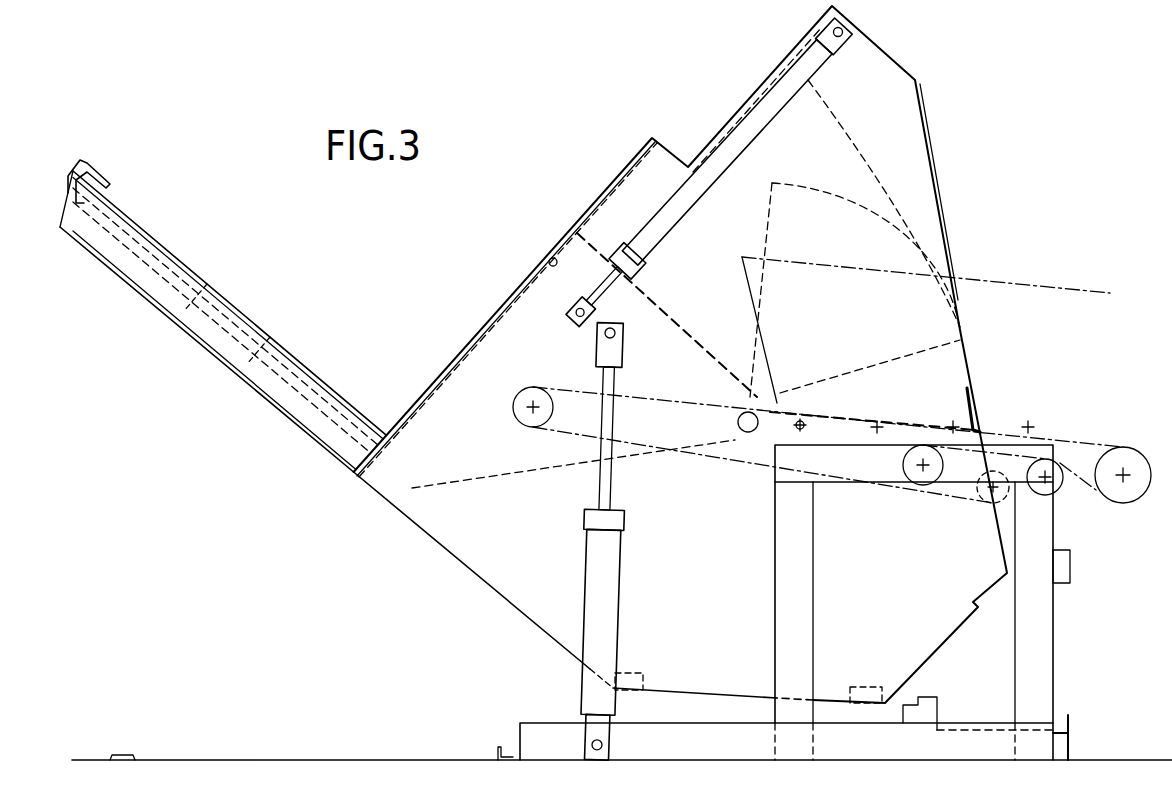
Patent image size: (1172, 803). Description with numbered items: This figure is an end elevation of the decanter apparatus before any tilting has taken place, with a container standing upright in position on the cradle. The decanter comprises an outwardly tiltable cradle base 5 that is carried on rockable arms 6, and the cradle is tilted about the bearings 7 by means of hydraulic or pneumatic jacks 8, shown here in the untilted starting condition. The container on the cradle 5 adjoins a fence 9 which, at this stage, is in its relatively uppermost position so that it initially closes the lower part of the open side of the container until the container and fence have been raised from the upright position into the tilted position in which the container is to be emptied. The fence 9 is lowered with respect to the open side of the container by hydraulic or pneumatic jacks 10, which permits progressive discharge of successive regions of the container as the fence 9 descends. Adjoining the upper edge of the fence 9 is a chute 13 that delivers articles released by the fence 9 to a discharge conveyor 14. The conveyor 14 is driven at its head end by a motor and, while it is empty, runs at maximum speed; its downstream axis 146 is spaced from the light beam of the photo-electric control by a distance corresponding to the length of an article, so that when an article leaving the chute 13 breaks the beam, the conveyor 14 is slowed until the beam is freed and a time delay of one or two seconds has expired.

The cradle base 5 is at (283, 387).
The rockable arms 6 is at (482, 558).
The bearings 7 is at (746, 432).
The jacks 8 is at (613, 583).
The fence 9 is at (540, 262).
The jacks 10 is at (665, 230).
The chute 13 is at (686, 324).
The discharge conveyor 14 is at (1076, 440).
The downstream axis 146 is at (1125, 475).